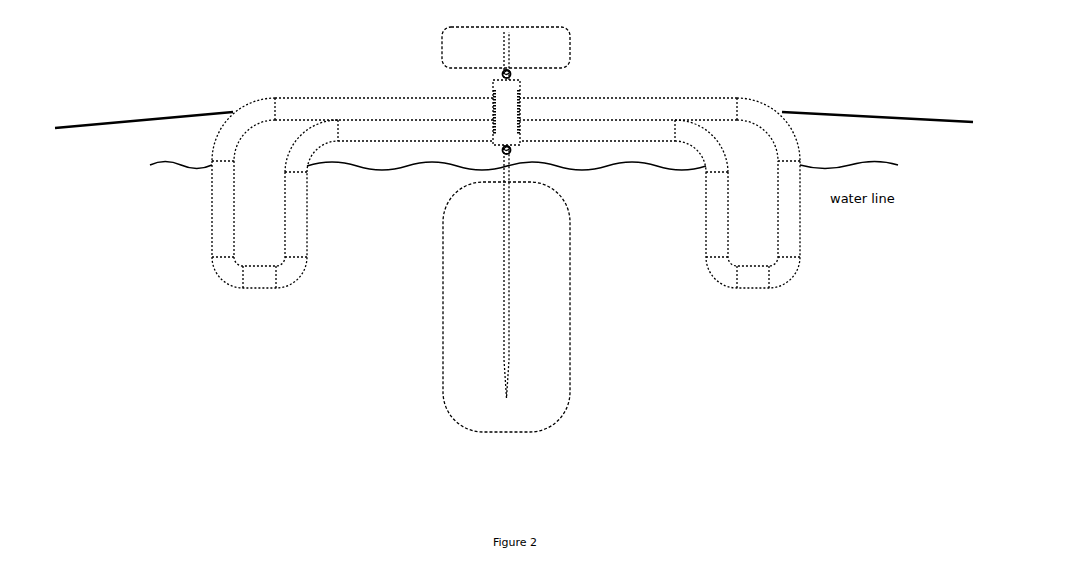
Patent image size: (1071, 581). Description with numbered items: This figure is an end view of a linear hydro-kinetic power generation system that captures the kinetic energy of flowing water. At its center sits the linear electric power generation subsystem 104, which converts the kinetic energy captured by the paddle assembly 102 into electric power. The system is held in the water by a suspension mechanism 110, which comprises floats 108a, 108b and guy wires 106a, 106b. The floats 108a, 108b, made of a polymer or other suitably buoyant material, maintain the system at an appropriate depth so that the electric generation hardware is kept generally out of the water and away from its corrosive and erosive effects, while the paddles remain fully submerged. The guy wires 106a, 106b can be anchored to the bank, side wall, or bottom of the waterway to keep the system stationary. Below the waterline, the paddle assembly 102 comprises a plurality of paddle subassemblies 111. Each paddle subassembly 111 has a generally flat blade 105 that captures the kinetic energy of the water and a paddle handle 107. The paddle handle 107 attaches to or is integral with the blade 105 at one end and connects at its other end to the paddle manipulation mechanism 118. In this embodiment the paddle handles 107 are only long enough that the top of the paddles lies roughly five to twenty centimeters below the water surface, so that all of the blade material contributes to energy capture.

The paddle assembly 102 is at (514, 223).
The linear electric power generation subsystem 104 is at (523, 84).
The blade 105 is at (570, 252).
The guy wire 106a is at (813, 112).
The guy wire 106b is at (157, 113).
The paddle handle 107 is at (510, 272).
The float 108a is at (720, 95).
The float 108b is at (250, 92).
The suspension mechanism 110 is at (806, 308).
The paddle subassembly 111 is at (417, 278).
The paddle manipulation mechanism 118 is at (515, 152).